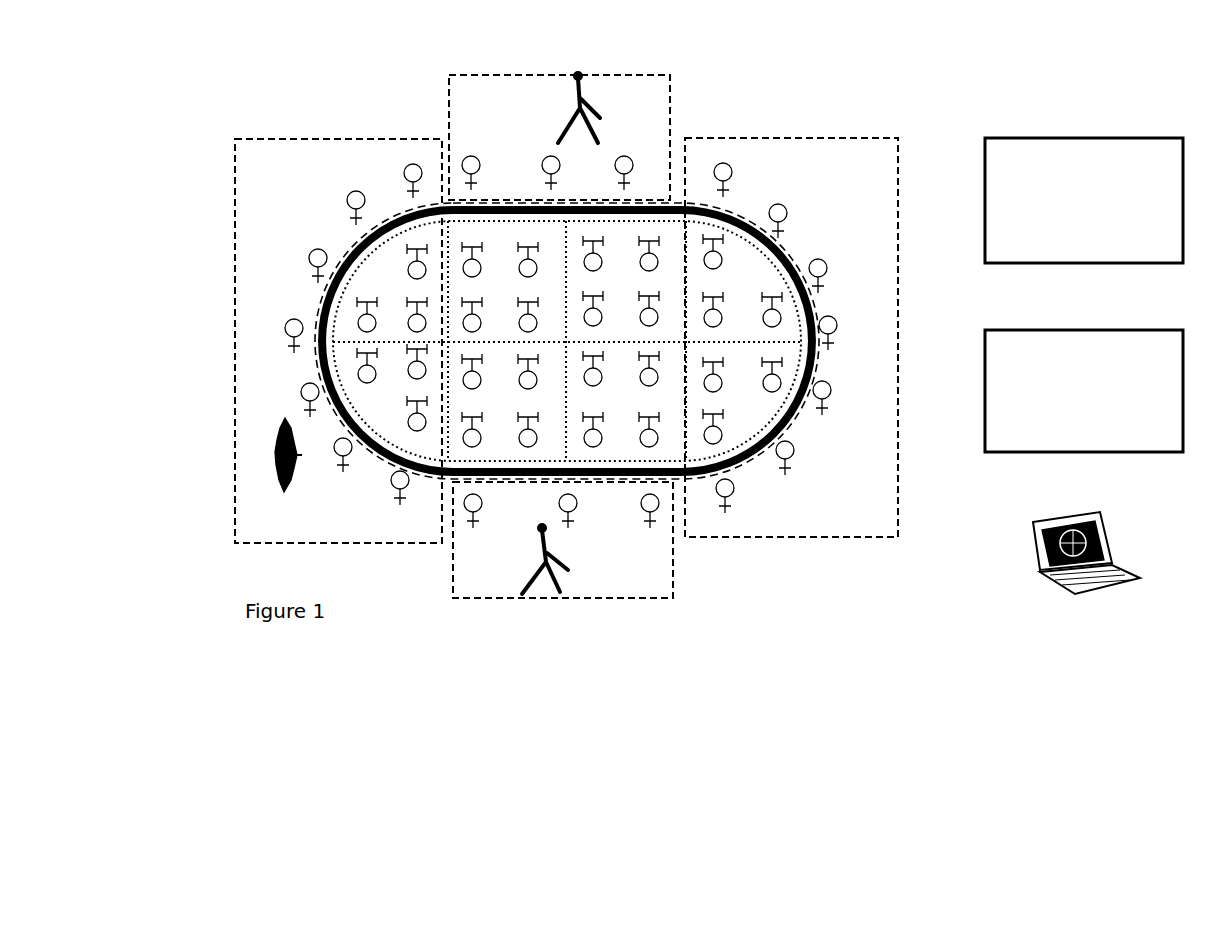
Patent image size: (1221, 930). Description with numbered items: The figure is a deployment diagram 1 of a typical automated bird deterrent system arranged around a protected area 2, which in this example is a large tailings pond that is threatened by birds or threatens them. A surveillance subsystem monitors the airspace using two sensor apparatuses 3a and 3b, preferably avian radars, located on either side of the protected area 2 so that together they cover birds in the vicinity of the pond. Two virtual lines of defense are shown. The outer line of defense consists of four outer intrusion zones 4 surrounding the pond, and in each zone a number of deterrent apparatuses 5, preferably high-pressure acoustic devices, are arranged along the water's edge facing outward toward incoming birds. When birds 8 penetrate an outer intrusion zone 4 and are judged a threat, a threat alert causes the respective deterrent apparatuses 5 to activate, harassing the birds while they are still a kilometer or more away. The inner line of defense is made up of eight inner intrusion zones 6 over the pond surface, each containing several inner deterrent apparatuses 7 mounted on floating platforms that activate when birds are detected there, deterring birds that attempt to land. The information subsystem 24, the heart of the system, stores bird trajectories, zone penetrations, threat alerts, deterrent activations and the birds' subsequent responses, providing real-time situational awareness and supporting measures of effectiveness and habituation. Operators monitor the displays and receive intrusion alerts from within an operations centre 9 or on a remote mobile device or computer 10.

The deployment diagram 1 is at (957, 58).
The protected area 2 is at (755, 458).
The sensor apparatus 3a is at (600, 119).
The sensor apparatus 3b is at (552, 548).
The outer intrusion zone 4 is at (895, 135).
The deterrent apparatus 5 is at (787, 208).
The inner intrusion zone 6 is at (358, 400).
The inner deterrent apparatus 7 is at (614, 423).
The birds 8 is at (283, 455).
The operations centre 9 is at (1062, 326).
The remote mobile device or computer 10 is at (1105, 542).
The information subsystem 24 is at (1045, 133).